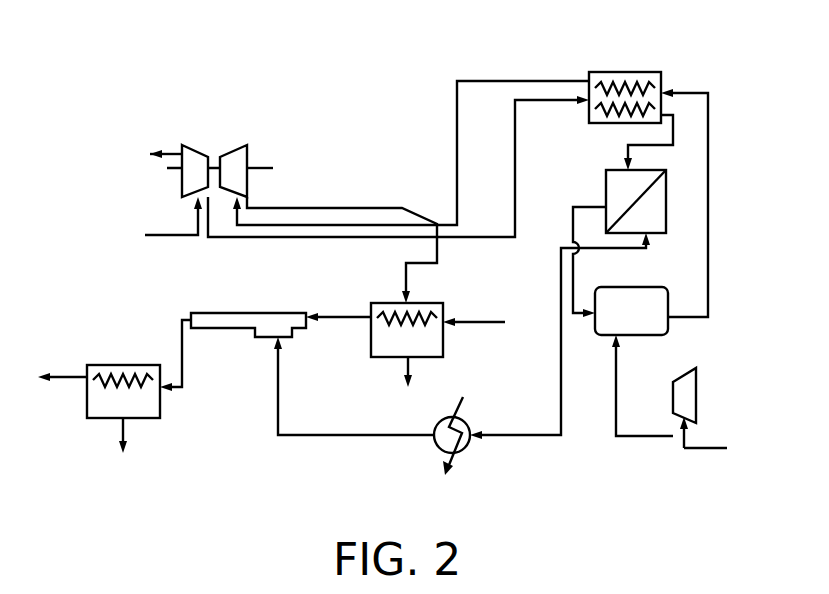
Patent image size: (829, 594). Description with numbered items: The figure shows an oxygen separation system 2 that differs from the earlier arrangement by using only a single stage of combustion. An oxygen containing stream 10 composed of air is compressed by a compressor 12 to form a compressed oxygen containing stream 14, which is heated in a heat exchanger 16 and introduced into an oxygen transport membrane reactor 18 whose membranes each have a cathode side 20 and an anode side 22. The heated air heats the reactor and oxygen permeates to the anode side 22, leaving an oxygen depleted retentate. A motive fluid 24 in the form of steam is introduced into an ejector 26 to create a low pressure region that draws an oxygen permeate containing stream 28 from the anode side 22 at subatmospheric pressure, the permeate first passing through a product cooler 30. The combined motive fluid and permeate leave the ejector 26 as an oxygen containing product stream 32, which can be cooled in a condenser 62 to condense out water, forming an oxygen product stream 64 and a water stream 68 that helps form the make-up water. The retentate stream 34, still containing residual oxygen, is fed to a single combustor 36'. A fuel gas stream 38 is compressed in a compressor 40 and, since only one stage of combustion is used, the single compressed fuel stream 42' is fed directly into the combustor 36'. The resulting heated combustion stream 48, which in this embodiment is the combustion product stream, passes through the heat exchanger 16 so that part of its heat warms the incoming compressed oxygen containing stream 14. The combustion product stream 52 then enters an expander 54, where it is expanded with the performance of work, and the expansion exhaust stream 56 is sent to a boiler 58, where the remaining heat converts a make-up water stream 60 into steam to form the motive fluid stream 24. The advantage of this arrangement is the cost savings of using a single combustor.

The oxygen separation system 2 is at (345, 84).
The oxygen containing stream 10 is at (177, 237).
The compressor 12 is at (197, 158).
The compressed oxygen containing stream 14 is at (262, 238).
The heat exchanger 16 is at (637, 72).
The oxygen transport membrane reactor 18 is at (606, 182).
The cathode side 20 is at (616, 175).
The anode side 22 is at (666, 206).
The motive fluid 24 is at (337, 315).
The ejector 26 is at (233, 325).
The oxygen permeate containing stream 28 is at (563, 400).
The product cooler 30 is at (437, 450).
The oxygen containing product stream 32 is at (182, 337).
The retentate stream 34 is at (573, 222).
The combustor 36' is at (638, 296).
The fuel gas stream 38 is at (702, 448).
The compressor 40 is at (690, 397).
The compressed fuel stream 42' is at (642, 413).
The heated combustion stream 48 is at (708, 290).
The combustion product stream 52 is at (457, 150).
The expander 54 is at (233, 157).
The expansion exhaust stream 56 is at (330, 209).
The boiler 58 is at (380, 357).
The make-up water stream 60 is at (485, 320).
The condenser 62 is at (97, 402).
The oxygen product stream 64 is at (66, 377).
The water stream 68 is at (127, 425).